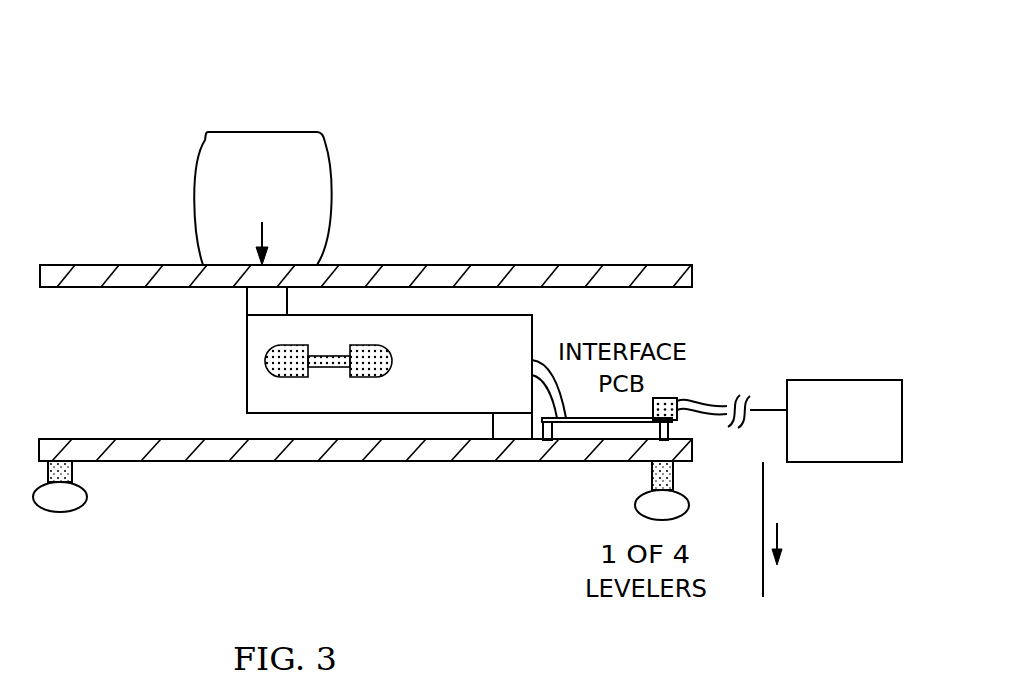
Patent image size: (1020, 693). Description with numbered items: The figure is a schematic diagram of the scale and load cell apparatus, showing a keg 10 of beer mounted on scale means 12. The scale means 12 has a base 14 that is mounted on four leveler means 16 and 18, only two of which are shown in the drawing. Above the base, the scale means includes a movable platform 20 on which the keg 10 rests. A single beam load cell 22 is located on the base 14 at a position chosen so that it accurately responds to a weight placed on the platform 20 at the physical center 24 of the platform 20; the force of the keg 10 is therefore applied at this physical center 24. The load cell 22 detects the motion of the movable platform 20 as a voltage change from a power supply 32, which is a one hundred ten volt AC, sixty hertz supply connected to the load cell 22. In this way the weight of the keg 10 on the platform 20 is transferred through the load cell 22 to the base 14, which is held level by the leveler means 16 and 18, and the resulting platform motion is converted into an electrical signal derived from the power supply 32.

The keg 10 is at (327, 160).
The scale means 12 is at (366, 239).
The base 14 is at (338, 463).
The leveler means 16 is at (62, 512).
The leveler means 18 is at (635, 498).
The movable platform 20 is at (357, 266).
The single beam load cell 22 is at (428, 315).
The physical center 24 is at (250, 266).
The power supply 32 is at (810, 380).